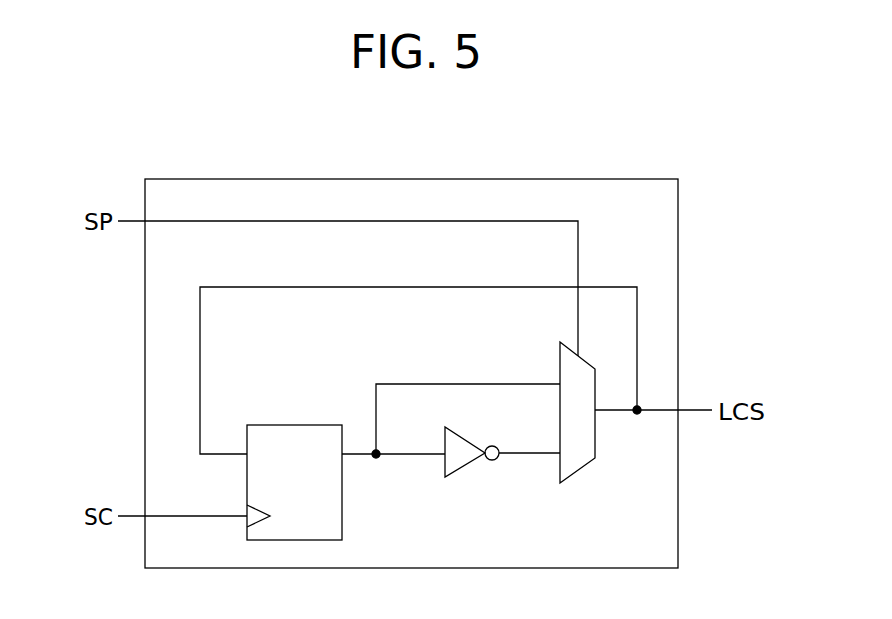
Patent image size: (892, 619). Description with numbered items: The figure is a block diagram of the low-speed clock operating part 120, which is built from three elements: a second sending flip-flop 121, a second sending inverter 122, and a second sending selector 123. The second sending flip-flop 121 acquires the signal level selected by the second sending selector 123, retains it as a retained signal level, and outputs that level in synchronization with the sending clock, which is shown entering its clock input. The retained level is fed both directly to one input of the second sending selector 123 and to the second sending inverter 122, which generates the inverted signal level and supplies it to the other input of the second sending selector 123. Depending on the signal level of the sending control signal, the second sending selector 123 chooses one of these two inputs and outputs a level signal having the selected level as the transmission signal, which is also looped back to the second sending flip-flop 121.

The low-speed clock operating part 120 is at (571, 179).
The second sending flip-flop 121 is at (297, 425).
The second sending inverter 122 is at (459, 471).
The second sending selector 123 is at (560, 356).